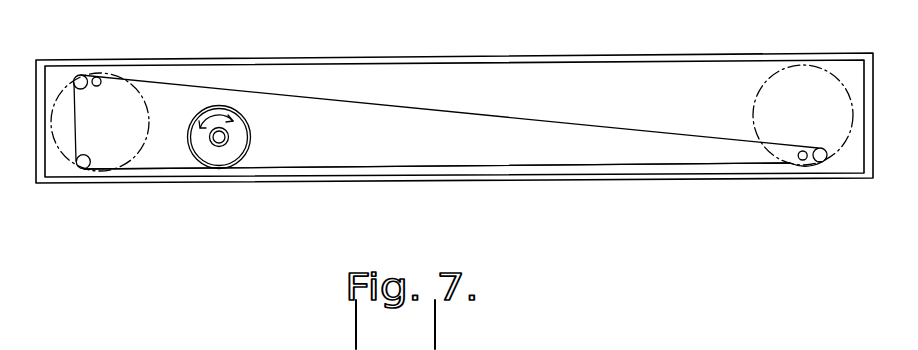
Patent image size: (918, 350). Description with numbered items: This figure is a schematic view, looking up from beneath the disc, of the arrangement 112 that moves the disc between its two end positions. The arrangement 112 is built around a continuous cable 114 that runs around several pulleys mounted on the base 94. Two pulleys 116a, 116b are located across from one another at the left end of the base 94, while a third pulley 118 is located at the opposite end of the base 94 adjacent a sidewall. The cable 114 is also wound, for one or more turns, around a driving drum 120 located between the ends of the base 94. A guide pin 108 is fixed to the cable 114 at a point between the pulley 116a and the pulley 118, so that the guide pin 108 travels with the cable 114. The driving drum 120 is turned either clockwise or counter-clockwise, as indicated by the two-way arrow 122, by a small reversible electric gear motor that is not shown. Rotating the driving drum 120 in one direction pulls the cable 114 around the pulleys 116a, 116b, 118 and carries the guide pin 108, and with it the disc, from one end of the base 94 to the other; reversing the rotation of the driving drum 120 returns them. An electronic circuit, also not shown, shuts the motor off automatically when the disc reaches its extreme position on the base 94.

The base 94 is at (708, 158).
The guide pin 108 is at (98, 77).
The arrangement 112 is at (261, 53).
The continuous cable 114 is at (500, 115).
The pulley 116a is at (81, 169).
The pulley 116b is at (80, 76).
The pulley 118 is at (820, 163).
The driving drum 120 is at (242, 146).
The two-way arrow 122 is at (208, 108).